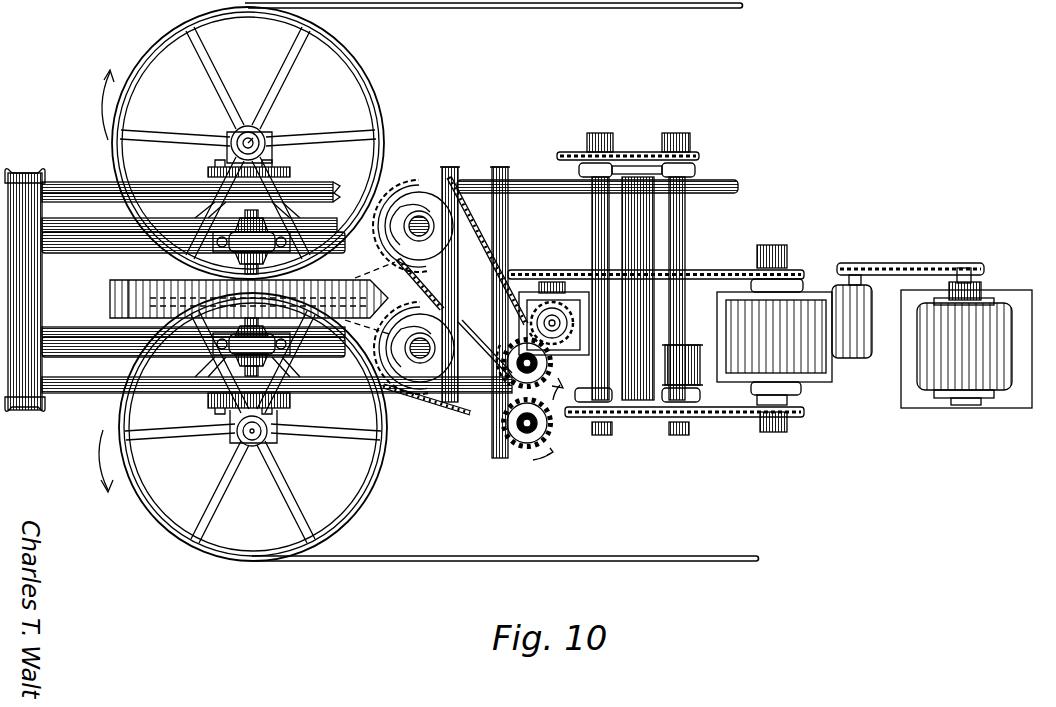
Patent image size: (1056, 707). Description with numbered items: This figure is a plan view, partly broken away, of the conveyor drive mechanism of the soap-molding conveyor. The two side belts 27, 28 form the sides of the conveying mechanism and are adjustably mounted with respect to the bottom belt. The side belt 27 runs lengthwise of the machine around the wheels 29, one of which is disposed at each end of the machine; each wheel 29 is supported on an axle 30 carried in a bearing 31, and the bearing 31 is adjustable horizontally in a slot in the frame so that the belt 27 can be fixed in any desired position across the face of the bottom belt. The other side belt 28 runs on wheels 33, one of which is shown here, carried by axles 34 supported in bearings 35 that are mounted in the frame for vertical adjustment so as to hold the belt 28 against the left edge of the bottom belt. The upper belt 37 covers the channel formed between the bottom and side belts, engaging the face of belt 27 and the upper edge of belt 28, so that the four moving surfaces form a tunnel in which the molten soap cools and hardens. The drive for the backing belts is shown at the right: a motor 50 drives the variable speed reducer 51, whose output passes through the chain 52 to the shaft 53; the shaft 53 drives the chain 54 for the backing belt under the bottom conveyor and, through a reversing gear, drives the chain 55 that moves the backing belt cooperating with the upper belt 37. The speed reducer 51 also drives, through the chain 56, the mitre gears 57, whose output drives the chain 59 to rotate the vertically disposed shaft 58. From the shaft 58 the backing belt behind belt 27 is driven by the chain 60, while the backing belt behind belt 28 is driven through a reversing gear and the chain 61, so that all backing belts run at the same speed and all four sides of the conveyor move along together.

The side belt 27 is at (525, 9).
The side belt 28 is at (366, 562).
The wheel 29 is at (300, 78).
The axle 30 is at (268, 137).
The bearing 31 is at (228, 135).
The wheel 33 is at (352, 520).
The axle 34 is at (240, 442).
The bearing 35 is at (280, 440).
The upper belt 37 is at (110, 296).
The motor 50 is at (948, 370).
The speed reducer 51 is at (810, 360).
The chain 52 is at (735, 417).
The shaft 53 is at (680, 432).
The chain 54 is at (638, 422).
The chain 55 is at (636, 150).
The chain 56 is at (690, 268).
The mitre gears 57 is at (572, 307).
The shaft 58 is at (545, 387).
The chain 59 is at (515, 330).
The chain 60 is at (455, 408).
The chain 61 is at (485, 240).